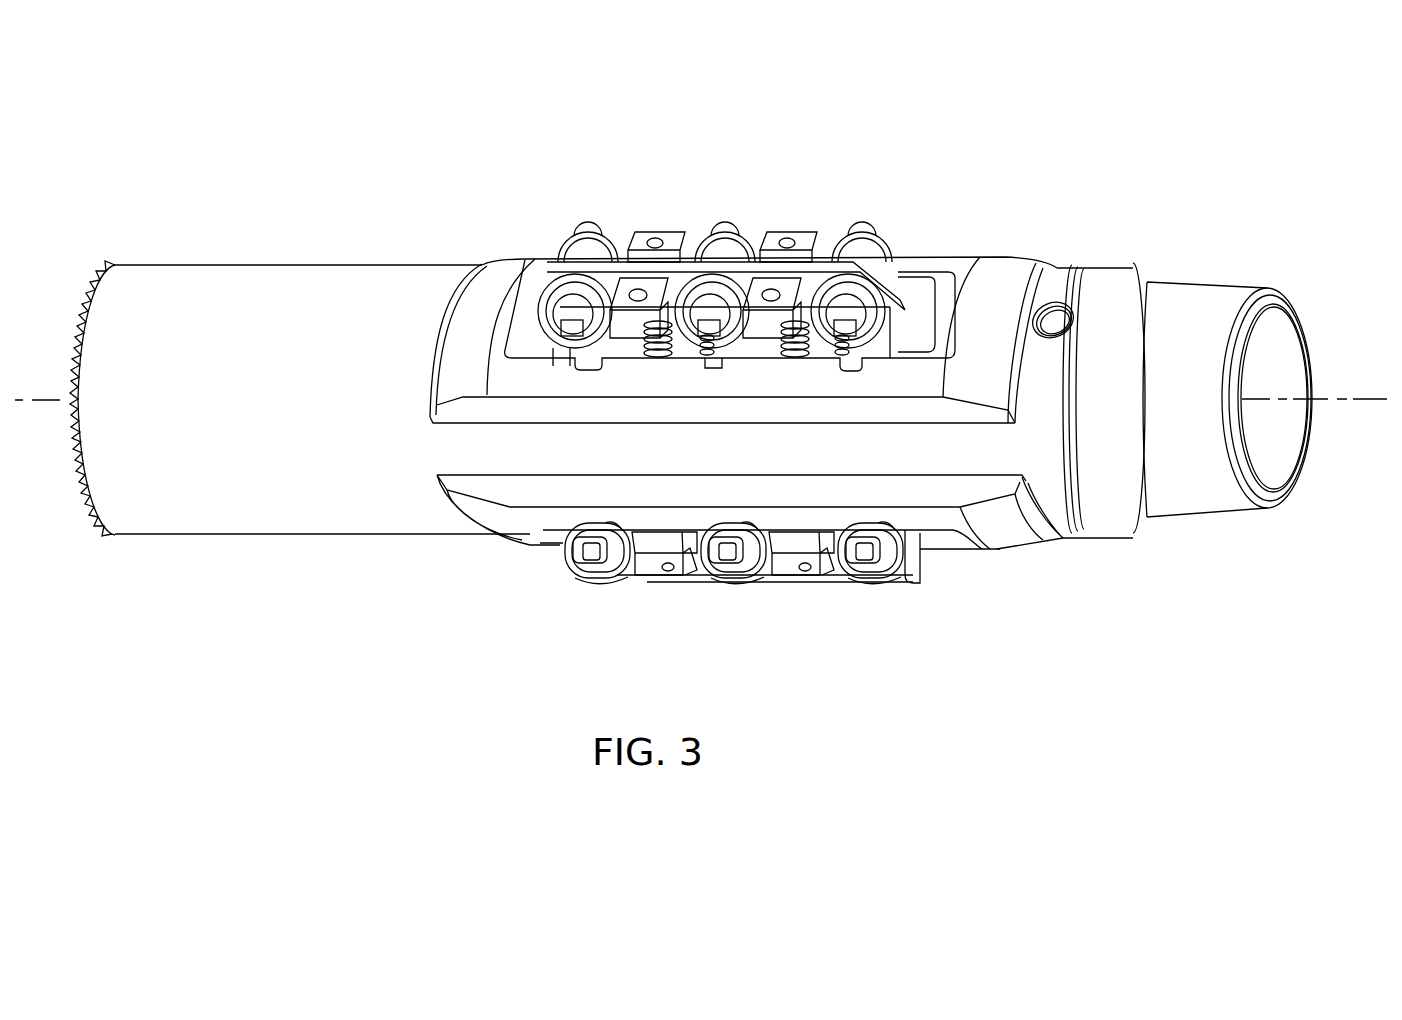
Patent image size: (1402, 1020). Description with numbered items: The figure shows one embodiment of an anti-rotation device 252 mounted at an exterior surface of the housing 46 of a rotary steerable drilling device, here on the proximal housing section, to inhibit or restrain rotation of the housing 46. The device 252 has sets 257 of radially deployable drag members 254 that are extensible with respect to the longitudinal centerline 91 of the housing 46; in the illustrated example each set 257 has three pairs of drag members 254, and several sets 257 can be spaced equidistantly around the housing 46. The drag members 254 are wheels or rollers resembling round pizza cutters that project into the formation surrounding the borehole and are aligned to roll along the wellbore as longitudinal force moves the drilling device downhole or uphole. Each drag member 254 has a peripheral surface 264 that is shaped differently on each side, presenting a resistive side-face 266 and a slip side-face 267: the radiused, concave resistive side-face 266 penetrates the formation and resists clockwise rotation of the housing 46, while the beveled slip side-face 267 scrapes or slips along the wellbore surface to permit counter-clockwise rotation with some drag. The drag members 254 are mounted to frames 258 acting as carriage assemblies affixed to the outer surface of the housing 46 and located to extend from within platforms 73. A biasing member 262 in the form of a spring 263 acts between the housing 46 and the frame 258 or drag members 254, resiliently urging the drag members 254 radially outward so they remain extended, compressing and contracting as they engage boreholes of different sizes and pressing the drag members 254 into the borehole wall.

The anti-rotation device 252 is at (948, 138).
The housing 46 is at (415, 536).
The longitudinal centerline 91 is at (52, 403).
The platform 73 is at (498, 530).
The peripheral surface 264 is at (548, 233).
The resistive side-face 266 is at (575, 252).
The slip side-face 267 is at (598, 228).
The frame 258 is at (714, 263).
The biasing member 262 is at (681, 368).
The spring 263 is at (786, 347).
The drag member 254 is at (602, 567).
The set of drag members 257 is at (623, 597).